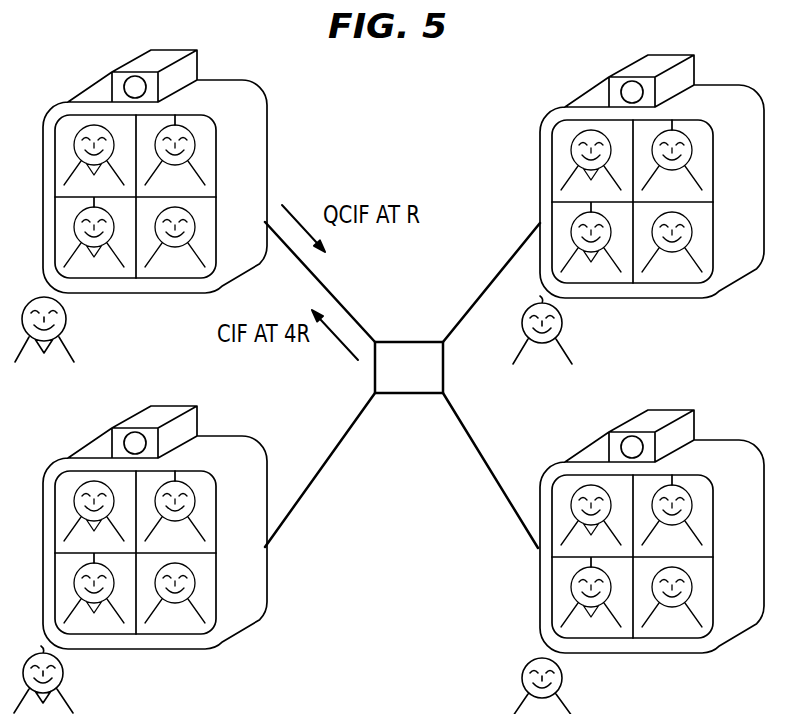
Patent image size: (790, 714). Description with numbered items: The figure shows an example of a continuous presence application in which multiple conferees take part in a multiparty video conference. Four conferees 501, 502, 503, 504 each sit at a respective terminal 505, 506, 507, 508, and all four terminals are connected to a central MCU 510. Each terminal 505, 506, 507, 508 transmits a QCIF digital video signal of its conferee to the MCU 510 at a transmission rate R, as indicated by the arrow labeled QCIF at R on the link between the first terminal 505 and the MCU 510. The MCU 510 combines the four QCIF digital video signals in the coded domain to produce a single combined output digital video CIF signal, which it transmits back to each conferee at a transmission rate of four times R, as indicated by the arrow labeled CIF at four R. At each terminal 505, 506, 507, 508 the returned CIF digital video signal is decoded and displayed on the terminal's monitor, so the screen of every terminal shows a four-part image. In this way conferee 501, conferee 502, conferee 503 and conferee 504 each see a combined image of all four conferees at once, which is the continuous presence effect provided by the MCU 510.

The conferee 501 is at (78, 337).
The conferee 502 is at (574, 338).
The conferee 503 is at (77, 690).
The conferee 504 is at (575, 692).
The terminal 505 is at (172, 56).
The terminal 506 is at (669, 60).
The terminal 507 is at (172, 412).
The terminal 508 is at (669, 416).
The MCU 510 is at (392, 342).